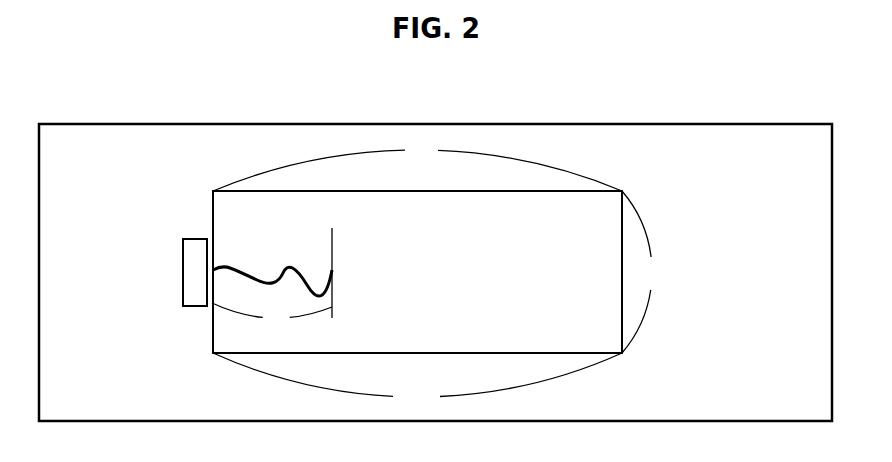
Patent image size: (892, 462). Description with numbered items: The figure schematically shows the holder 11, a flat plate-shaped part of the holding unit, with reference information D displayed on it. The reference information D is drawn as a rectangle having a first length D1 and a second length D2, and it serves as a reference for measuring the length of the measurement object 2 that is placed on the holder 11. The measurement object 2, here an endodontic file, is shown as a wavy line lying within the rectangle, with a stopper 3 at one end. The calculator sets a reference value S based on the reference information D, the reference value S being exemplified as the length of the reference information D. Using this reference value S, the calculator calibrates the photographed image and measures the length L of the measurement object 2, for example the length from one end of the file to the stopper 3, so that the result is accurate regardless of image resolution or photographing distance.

The holder 11 is at (436, 124).
The reference information D is at (545, 191).
The stopper 3 is at (193, 272).
The measurement object 2 is at (255, 280).
The length of the measurement object L is at (272, 280).
The reference value S is at (417, 163).
The first length D1 is at (645, 272).
The second length D2 is at (417, 383).